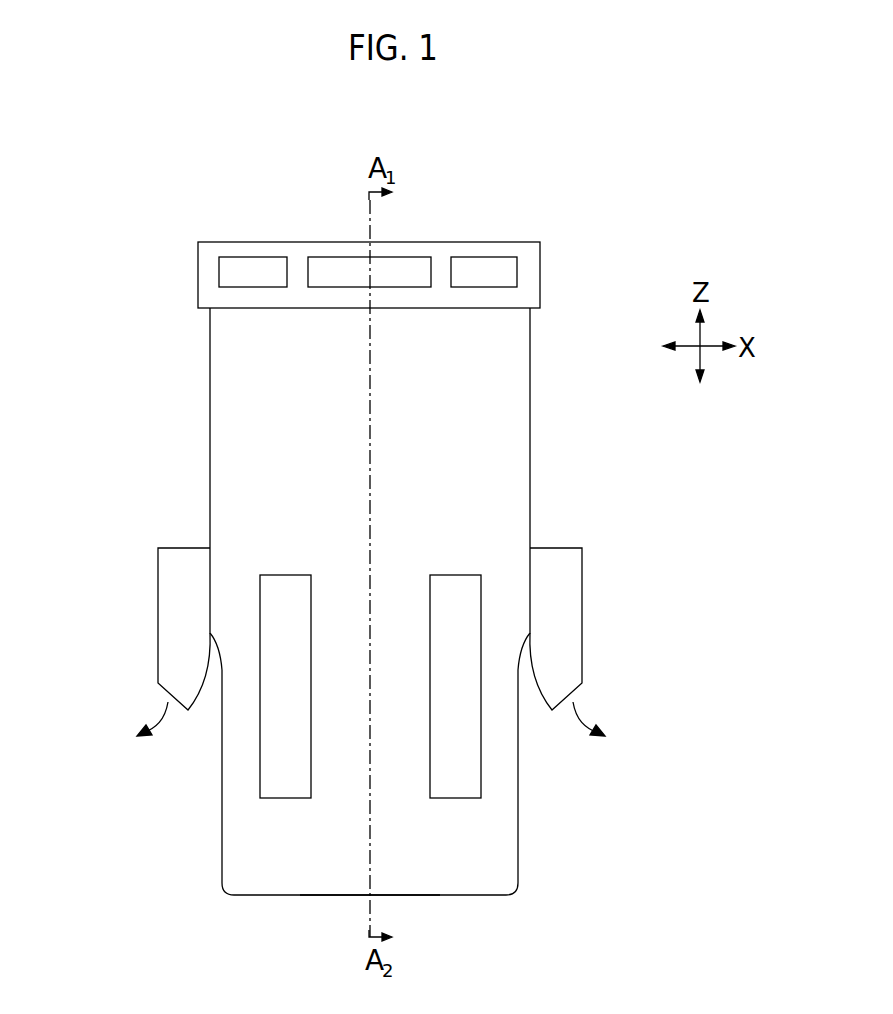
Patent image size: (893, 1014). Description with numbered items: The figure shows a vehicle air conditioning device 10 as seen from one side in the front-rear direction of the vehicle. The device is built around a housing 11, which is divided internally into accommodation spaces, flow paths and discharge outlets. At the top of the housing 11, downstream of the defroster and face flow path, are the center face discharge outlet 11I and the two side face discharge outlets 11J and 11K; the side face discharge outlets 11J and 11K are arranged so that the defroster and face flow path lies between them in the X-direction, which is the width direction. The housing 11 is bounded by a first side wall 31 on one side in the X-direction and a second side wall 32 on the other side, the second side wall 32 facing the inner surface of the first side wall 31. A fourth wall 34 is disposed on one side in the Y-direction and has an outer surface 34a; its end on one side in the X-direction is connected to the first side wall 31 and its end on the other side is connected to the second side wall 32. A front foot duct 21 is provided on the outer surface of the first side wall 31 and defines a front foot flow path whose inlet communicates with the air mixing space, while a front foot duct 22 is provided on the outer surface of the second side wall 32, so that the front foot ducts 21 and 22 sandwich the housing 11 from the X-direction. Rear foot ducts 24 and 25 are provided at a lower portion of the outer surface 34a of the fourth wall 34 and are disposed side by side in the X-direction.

The vehicle air conditioning device 10 is at (71, 143).
The housing 11 is at (198, 425).
The center face discharge outlet 11I is at (340, 268).
The side face discharge outlet 11J is at (495, 270).
The side face discharge outlet 11K is at (242, 268).
The front foot duct 21 is at (558, 618).
The front foot duct 22 is at (182, 618).
The rear foot duct 24 is at (472, 680).
The rear foot duct 25 is at (275, 705).
The first side wall 31 is at (530, 440).
The second side wall 32 is at (209, 467).
The fourth wall 34 is at (320, 823).
The outer surface 34a is at (345, 827).